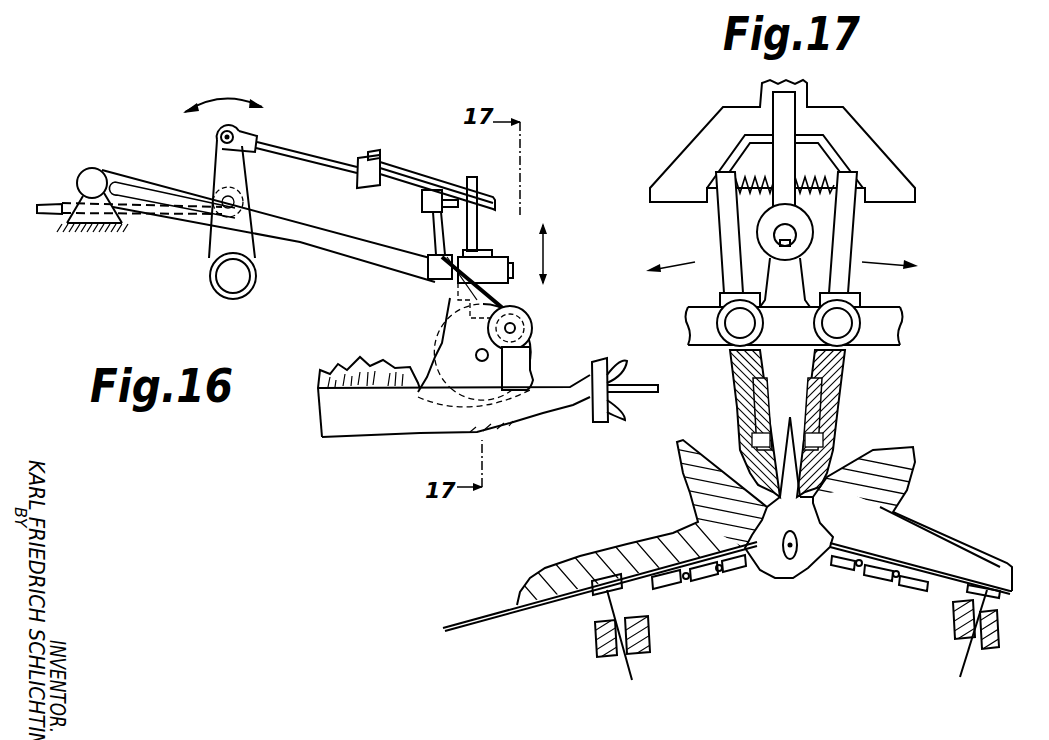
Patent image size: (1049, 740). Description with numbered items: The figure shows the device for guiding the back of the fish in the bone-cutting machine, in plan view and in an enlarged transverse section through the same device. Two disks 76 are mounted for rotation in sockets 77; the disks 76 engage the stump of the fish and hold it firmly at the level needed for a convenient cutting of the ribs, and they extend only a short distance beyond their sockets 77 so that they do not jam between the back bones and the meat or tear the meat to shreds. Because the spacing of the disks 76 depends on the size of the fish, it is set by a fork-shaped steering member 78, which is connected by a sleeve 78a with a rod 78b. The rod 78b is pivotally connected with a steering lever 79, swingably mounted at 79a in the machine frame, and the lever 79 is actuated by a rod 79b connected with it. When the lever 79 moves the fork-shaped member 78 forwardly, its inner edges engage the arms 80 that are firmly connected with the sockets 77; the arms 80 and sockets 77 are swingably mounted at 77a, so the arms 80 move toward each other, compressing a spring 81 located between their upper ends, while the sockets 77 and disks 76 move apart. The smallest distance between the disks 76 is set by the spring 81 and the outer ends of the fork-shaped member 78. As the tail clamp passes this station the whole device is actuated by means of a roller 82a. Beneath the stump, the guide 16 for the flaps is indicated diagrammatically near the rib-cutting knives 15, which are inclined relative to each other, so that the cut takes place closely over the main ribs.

In FIG. 17, the rib-cutting knives 15 is at (548, 604).
In FIG. 17, the guide for the flaps 16 is at (703, 579).
In FIG. 16, the disks 76 is at (435, 338).
In FIG. 17, the disks 76 is at (753, 403).
In FIG. 16, the sockets 77 is at (533, 380).
In FIG. 17, the sockets 77 is at (740, 370).
In FIG. 17, the pivot mounting of the arms and sockets 77a is at (730, 323).
In FIG. 16, the fork-shaped steering member 78 is at (415, 177).
In FIG. 17, the fork-shaped steering member 78 is at (877, 147).
In FIG. 16, the sleeve 78a is at (368, 188).
In FIG. 16, the rod 78b is at (312, 160).
In FIG. 16, the steering lever 79 is at (227, 157).
In FIG. 16, the swing mounting of the steering lever 79a is at (218, 275).
In FIG. 16, the actuating rod 79b is at (50, 200).
In FIG. 16, the arms 80 is at (480, 235).
In FIG. 17, the arms 80 is at (725, 227).
In FIG. 17, the spring 81 is at (803, 190).
In FIG. 16, the roller 82a is at (522, 312).